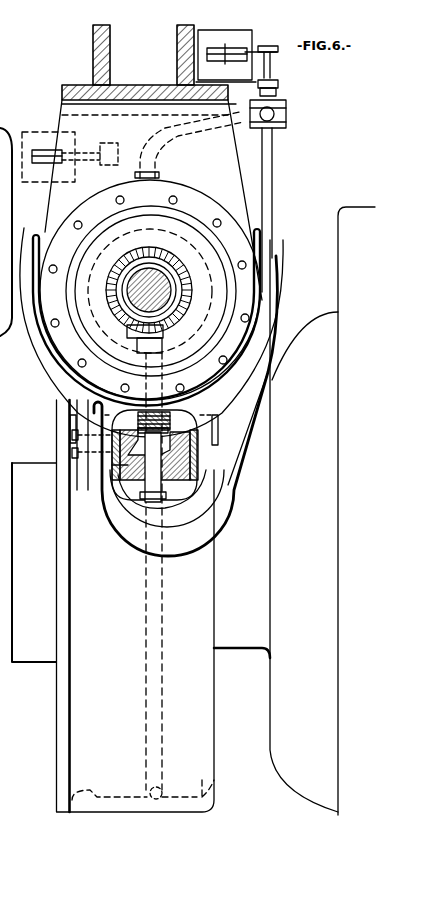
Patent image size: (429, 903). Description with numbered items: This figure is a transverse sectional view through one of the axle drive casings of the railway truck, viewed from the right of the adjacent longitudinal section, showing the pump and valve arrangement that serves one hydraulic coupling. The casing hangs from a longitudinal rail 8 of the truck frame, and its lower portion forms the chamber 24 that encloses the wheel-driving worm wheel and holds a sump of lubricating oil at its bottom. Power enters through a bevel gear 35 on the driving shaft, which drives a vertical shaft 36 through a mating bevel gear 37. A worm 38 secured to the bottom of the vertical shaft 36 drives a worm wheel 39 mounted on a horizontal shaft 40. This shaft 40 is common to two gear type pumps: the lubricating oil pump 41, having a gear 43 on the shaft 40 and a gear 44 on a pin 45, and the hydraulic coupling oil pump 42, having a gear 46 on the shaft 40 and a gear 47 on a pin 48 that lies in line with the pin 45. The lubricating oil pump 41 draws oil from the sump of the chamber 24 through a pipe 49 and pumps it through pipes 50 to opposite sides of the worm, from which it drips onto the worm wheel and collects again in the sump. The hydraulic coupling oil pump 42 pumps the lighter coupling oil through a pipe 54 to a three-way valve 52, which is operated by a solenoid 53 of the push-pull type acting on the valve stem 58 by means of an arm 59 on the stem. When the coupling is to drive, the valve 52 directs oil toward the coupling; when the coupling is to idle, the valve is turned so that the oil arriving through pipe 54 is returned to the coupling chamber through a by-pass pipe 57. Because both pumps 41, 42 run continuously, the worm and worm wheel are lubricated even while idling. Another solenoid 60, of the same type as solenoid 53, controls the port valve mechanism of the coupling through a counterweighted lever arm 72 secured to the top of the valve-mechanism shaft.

The longitudinal rail 8 is at (80, 100).
The chamber 24 is at (220, 782).
The bevel gear 35 is at (145, 264).
The vertical shaft 36 is at (137, 350).
The bevel gear 37 is at (150, 290).
The worm 38 is at (92, 406).
The worm wheel 39 is at (174, 492).
The horizontal shaft 40 is at (68, 420).
The lubricating oil pump 41 is at (112, 500).
The hydraulic coupling oil pump 42 is at (205, 485).
The gear 43 is at (70, 434).
The gear 44 is at (115, 468).
The pin 45 is at (70, 453).
The gear 46 is at (200, 432).
The gear 47 is at (205, 466).
The pin 48 is at (205, 452).
The pipe 49 is at (146, 678).
The pipe 50 is at (33, 362).
The three-way valve 52 is at (287, 110).
The solenoid 53 is at (196, 42).
The pipe 54 is at (274, 182).
The by-pass pipe 57 is at (165, 150).
The stem 58 is at (274, 68).
The arm 59 is at (252, 52).
The solenoid 60 is at (36, 136).
The counterweighted lever arm 72 is at (118, 143).